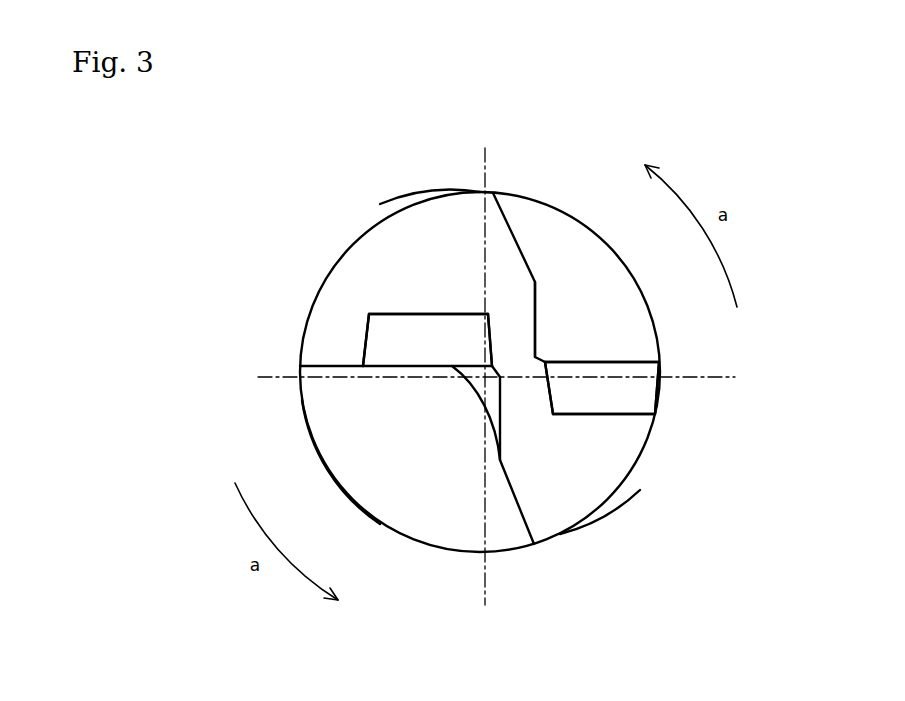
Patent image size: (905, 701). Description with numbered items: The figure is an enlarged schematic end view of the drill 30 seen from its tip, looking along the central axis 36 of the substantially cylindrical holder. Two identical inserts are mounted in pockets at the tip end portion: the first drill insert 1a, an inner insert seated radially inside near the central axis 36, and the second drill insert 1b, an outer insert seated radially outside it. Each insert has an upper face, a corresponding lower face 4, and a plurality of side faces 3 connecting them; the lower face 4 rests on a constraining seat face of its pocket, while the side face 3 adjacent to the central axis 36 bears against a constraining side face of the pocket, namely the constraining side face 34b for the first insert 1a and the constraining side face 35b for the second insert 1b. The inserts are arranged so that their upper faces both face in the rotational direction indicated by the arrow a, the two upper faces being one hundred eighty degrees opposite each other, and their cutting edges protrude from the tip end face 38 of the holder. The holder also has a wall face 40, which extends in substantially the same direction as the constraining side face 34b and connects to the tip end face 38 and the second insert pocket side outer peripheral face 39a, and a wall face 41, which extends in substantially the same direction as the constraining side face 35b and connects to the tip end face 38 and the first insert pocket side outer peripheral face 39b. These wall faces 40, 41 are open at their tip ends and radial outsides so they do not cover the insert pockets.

The drill 30 is at (283, 220).
The central axis 36 is at (482, 380).
The side face 3 is at (430, 330).
The wall face 40 is at (492, 403).
The wall face 41 is at (537, 318).
The first insert pocket side outer peripheral face 39b is at (418, 201).
The second insert pocket side outer peripheral face 39a is at (600, 503).
The constraining side face 34b is at (483, 340).
The lower face 4 is at (405, 312).
The first drill insert 1a is at (393, 348).
The second drill insert 1b is at (637, 393).
The constraining side face 35b is at (558, 395).
The tip end face 38 is at (523, 403).